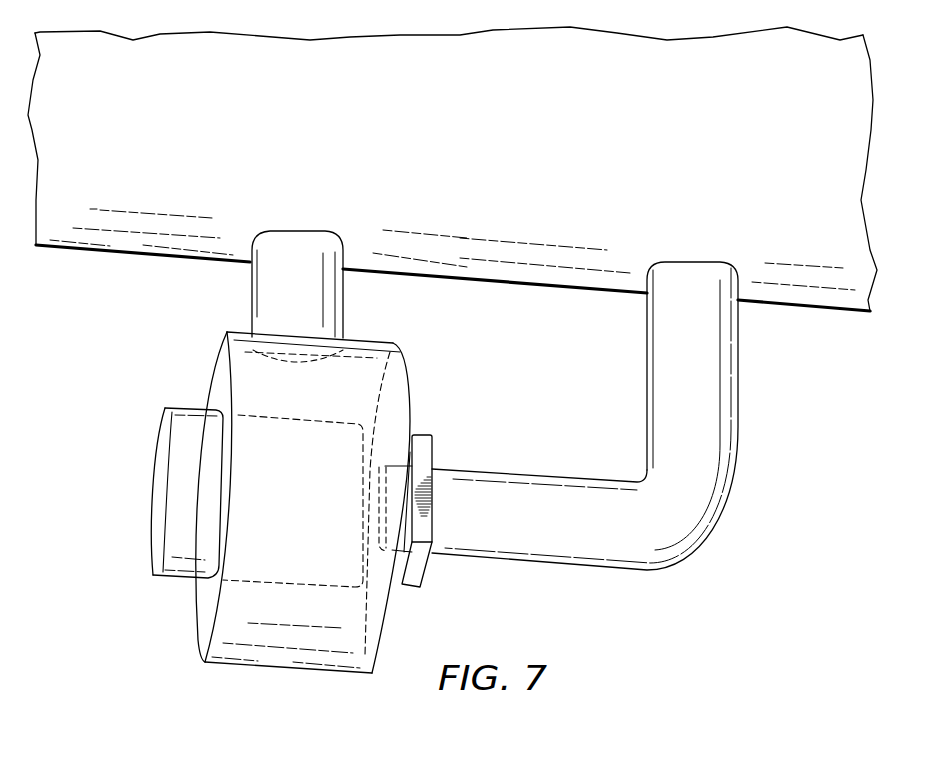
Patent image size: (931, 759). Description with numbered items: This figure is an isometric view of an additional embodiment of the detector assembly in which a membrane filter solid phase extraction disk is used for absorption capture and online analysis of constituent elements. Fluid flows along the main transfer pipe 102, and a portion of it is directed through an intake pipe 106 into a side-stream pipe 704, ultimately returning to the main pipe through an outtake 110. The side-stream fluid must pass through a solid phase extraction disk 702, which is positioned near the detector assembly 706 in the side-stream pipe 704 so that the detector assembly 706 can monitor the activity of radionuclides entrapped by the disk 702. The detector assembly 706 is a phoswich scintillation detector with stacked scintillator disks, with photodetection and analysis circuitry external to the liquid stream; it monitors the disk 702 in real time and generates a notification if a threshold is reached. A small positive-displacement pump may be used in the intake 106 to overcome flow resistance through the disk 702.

The main transfer pipe 102 is at (125, 240).
The outtake 110 is at (251, 303).
The intake pipe 106 is at (648, 378).
The solid phase extraction disk 702 is at (420, 565).
The side-stream pipe 704 is at (277, 657).
The detector assembly 706 is at (177, 578).